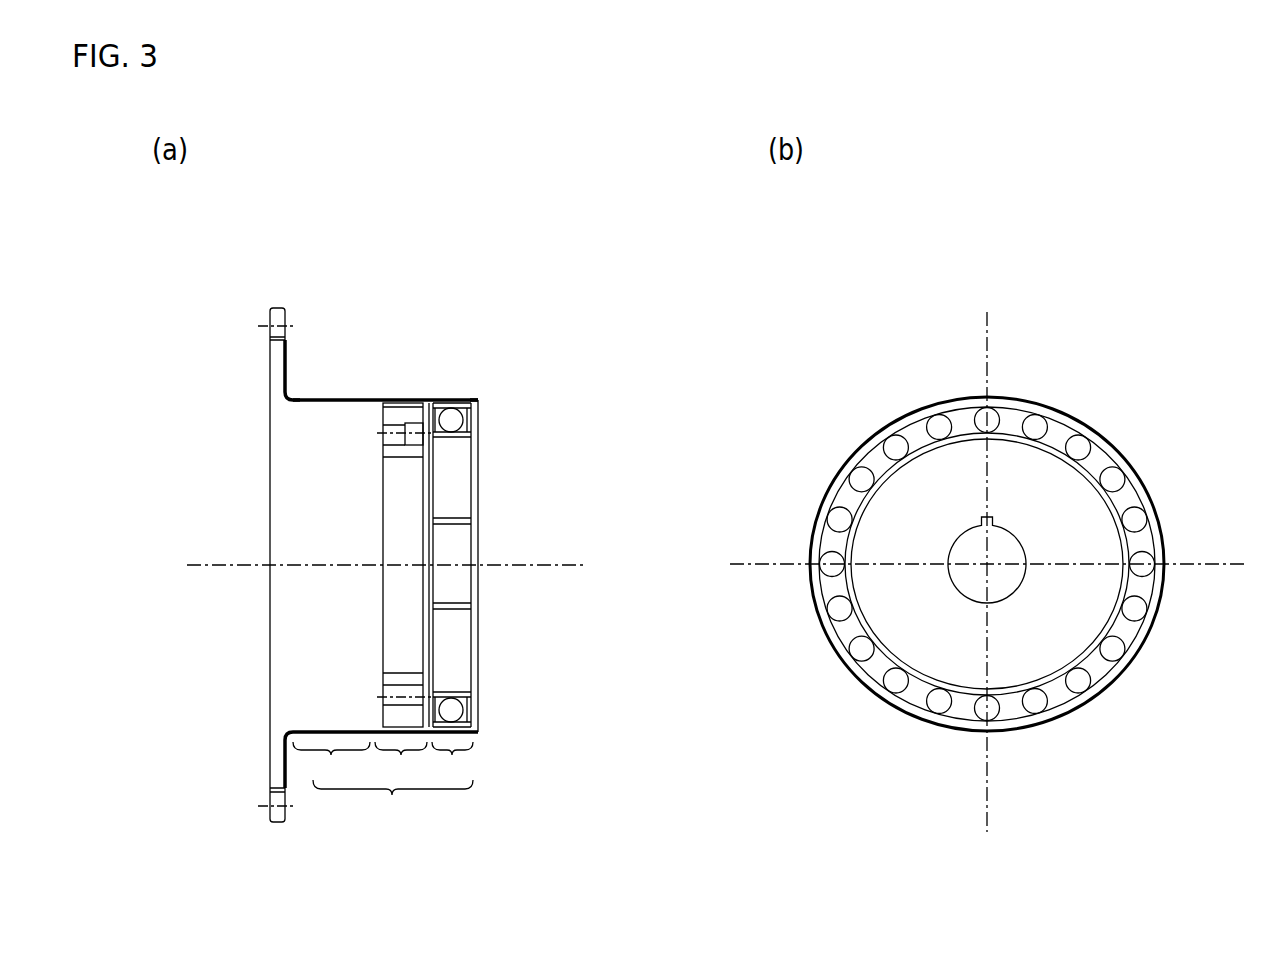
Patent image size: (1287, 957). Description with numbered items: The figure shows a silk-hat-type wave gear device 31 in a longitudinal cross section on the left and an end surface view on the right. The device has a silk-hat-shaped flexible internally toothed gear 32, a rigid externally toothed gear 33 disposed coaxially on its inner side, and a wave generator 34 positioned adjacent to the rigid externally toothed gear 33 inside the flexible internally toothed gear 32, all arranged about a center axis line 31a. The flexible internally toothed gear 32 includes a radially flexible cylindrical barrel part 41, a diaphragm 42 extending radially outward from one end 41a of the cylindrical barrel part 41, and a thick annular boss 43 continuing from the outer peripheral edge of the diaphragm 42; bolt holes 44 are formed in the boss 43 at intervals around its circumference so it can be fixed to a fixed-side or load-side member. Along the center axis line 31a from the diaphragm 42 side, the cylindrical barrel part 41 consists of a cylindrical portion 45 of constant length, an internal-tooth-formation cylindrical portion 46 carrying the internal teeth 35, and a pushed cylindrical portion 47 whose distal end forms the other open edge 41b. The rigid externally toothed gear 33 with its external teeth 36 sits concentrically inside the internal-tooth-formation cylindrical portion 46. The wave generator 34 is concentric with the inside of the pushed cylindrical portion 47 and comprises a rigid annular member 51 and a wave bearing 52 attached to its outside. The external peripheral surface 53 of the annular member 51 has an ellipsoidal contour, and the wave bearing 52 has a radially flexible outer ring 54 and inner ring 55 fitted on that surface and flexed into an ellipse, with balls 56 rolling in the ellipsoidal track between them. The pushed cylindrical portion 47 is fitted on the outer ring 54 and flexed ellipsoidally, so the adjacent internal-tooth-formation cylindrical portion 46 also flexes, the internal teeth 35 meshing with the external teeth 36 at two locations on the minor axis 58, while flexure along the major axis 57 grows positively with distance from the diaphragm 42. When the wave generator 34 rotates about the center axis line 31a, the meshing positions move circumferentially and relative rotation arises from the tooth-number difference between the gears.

The silk-hat-type wave gear device 31 is at (504, 298).
The center axis line 31a is at (200, 566).
The flexible internally toothed gear 32 is at (302, 379).
The rigid externally toothed gear 33 is at (370, 448).
The wave generator 34 is at (483, 474).
The internal teeth 35 is at (394, 400).
The external teeth 36 is at (407, 406).
The cylindrical barrel part 41 is at (393, 804).
The one end of the cylindrical barrel part 41a is at (291, 401).
The open edge 41b is at (480, 402).
The diaphragm 42 is at (283, 760).
The boss 43 is at (275, 790).
The bolt holes 44 is at (275, 810).
The cylindrical portion 45 is at (331, 765).
The internal-tooth-formation cylindrical portion 46 is at (401, 765).
The pushed cylindrical portion 47 is at (452, 765).
The rigid annular member 51 is at (471, 621).
The wave bearing 52 is at (473, 708).
The external peripheral surface 53 is at (450, 693).
The outer ring 54 is at (470, 728).
The inner ring 55 is at (470, 698).
The balls 56 is at (455, 712).
The major axis 57 is at (1195, 567).
The minor axis 58 is at (988, 342).